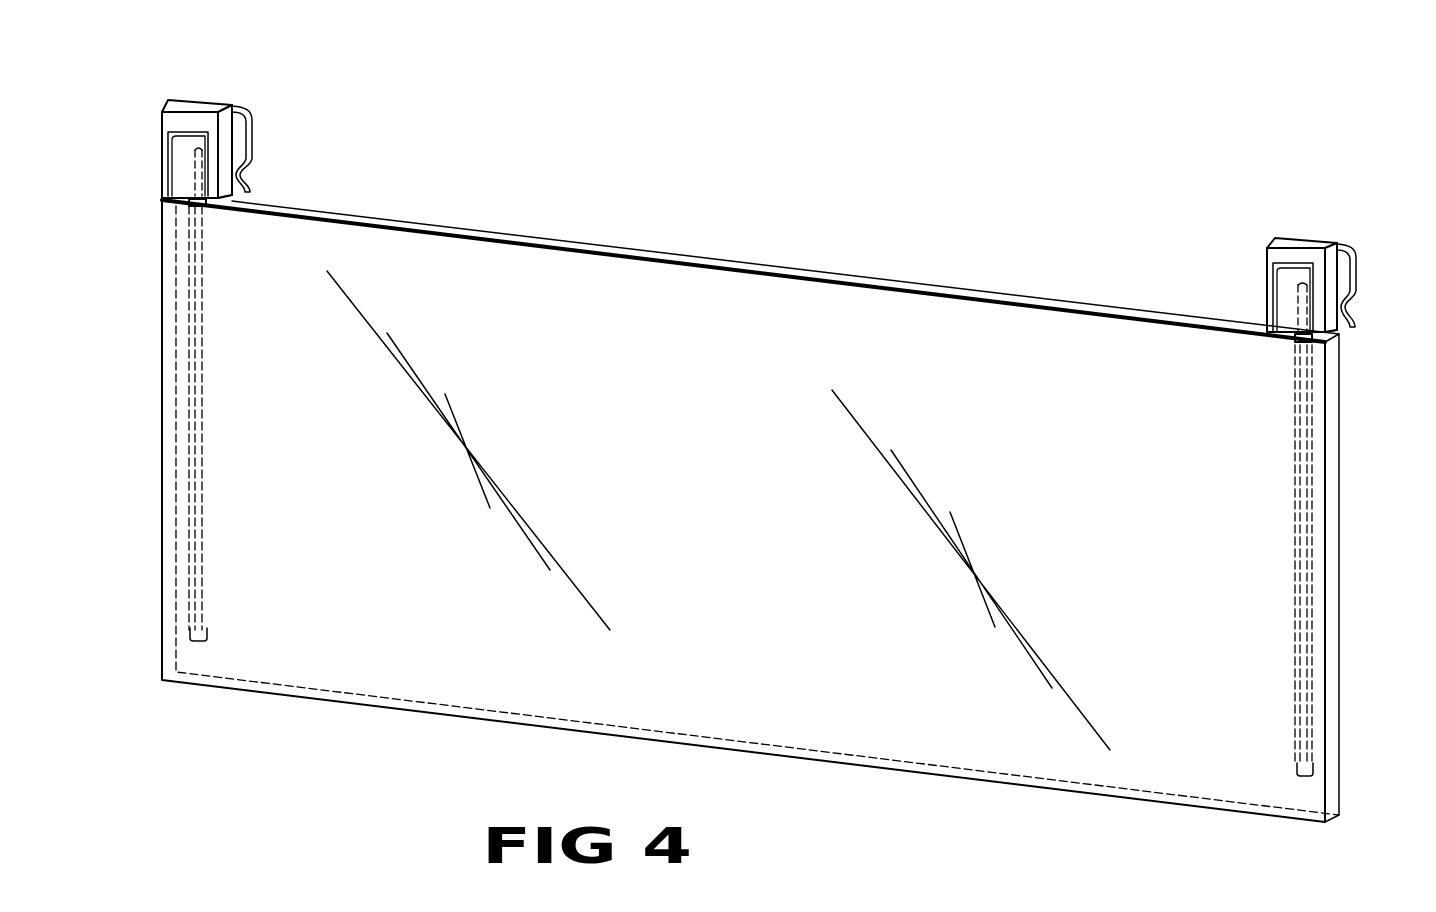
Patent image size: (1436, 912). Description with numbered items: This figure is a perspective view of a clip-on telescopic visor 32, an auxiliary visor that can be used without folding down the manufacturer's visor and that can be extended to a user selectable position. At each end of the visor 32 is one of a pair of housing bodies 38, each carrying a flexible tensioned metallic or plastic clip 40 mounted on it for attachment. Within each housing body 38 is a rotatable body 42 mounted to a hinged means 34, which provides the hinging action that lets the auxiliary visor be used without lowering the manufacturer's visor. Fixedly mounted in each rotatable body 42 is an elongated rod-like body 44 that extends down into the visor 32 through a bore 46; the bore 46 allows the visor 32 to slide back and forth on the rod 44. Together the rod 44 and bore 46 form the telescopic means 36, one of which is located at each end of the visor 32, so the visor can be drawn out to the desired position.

The clip-on telescopic visor 32 is at (817, 692).
The hinged means 34 is at (227, 141).
The telescopic means 36 is at (200, 262).
The housing body 38 is at (195, 108).
The clip 40 is at (253, 118).
The rotatable body 42 is at (177, 167).
The rod-like body 44 is at (195, 170).
The bore 46 is at (202, 287).